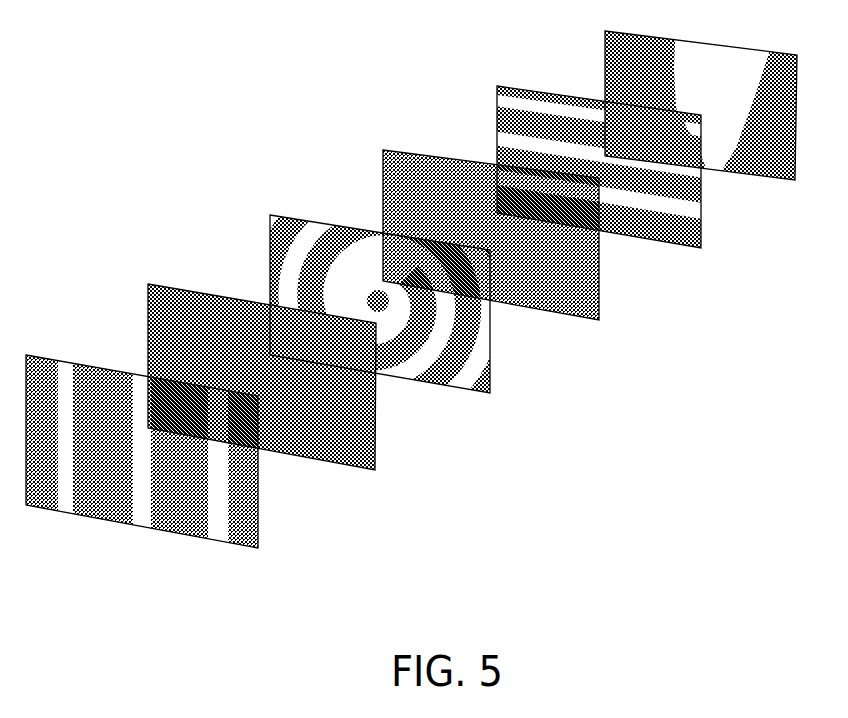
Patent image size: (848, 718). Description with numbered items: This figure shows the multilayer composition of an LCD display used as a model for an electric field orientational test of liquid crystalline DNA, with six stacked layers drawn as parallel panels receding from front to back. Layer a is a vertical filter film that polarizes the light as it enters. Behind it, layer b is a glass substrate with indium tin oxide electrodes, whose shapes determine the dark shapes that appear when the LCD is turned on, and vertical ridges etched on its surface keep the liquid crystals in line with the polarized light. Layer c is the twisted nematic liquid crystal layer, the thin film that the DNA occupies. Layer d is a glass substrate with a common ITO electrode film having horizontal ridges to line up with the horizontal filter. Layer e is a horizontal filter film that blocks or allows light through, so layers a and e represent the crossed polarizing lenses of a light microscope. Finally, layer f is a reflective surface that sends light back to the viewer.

The layer A a is at (161, 462).
The layer B b is at (283, 383).
The layer C c is at (397, 312).
The layer D d is at (513, 239).
The layer E e is at (621, 172).
The layer F f is at (716, 105).